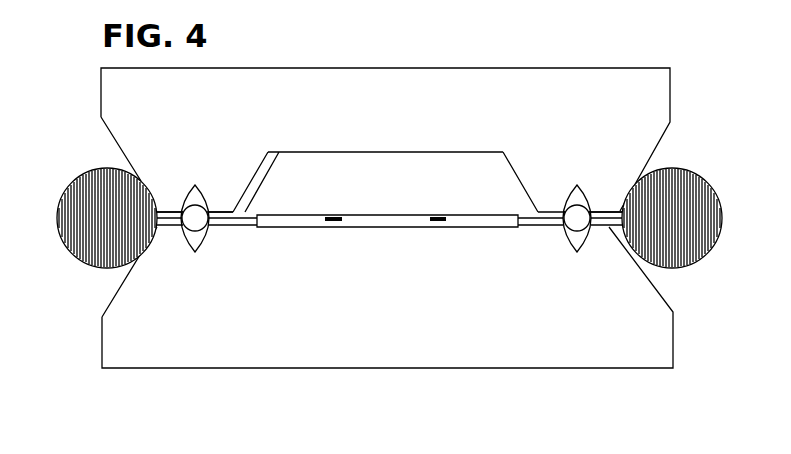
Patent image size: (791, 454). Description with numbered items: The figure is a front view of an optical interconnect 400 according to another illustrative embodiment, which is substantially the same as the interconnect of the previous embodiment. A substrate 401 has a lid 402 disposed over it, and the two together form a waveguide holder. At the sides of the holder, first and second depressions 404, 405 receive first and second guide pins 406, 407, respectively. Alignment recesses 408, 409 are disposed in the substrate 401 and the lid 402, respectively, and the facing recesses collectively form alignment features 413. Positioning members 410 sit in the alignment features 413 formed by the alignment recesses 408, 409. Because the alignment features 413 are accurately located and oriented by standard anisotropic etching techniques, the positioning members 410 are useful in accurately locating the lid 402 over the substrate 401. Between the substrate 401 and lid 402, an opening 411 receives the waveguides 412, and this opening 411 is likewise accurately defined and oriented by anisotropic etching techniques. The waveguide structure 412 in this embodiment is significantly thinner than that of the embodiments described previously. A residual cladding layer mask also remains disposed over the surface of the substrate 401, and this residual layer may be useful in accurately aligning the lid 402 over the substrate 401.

The optical interconnect 400 is at (756, 77).
The substrate 401 is at (662, 327).
The lid 402 is at (663, 108).
The first depression 404 is at (702, 263).
The second depression 405 is at (60, 270).
The first guide pin 406 is at (700, 180).
The second guide pin 407 is at (68, 187).
The alignment recess 408 is at (587, 235).
The alignment recess 409 is at (582, 190).
The positioning member 410 is at (195, 216).
The opening 411 is at (467, 198).
The waveguides 412 is at (507, 170).
The alignment feature 413 is at (280, 152).